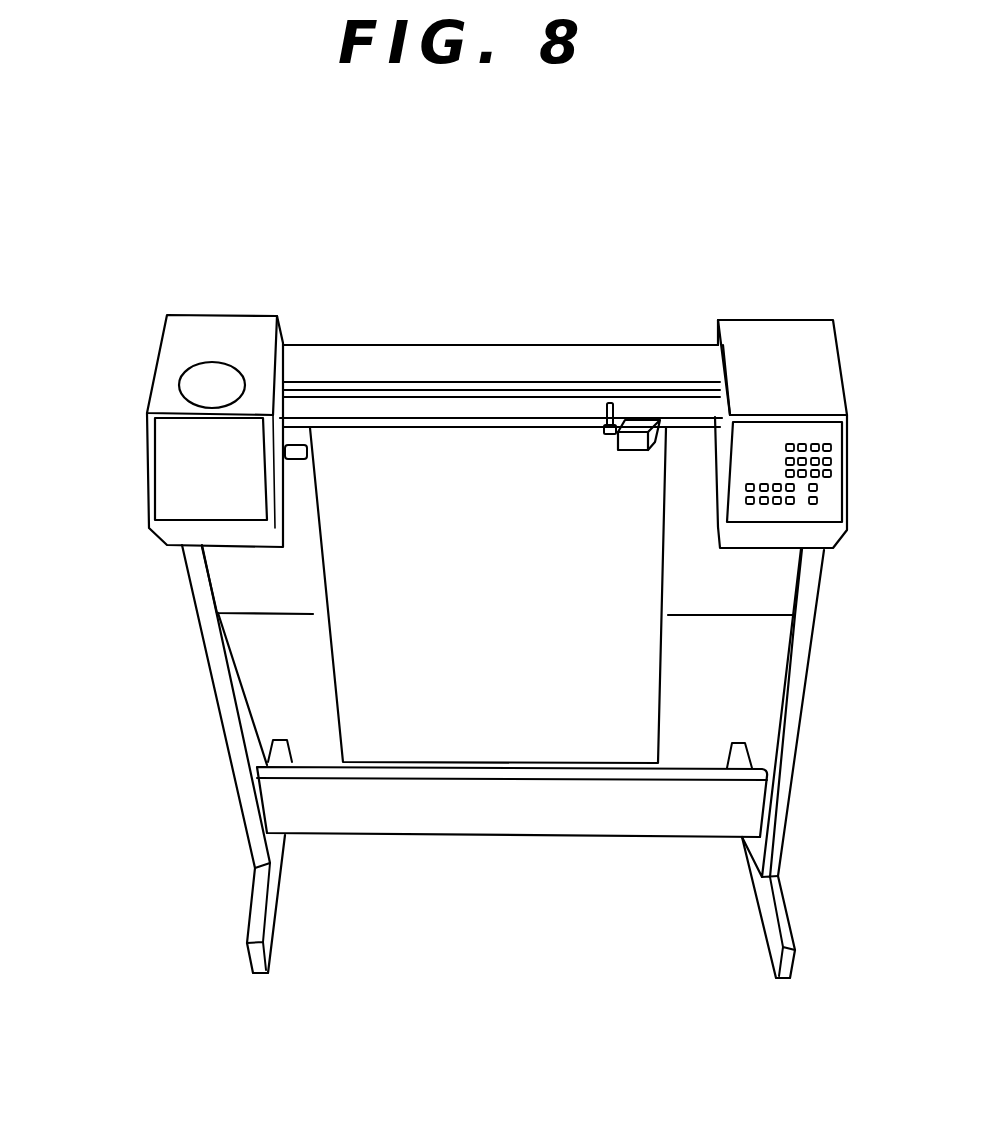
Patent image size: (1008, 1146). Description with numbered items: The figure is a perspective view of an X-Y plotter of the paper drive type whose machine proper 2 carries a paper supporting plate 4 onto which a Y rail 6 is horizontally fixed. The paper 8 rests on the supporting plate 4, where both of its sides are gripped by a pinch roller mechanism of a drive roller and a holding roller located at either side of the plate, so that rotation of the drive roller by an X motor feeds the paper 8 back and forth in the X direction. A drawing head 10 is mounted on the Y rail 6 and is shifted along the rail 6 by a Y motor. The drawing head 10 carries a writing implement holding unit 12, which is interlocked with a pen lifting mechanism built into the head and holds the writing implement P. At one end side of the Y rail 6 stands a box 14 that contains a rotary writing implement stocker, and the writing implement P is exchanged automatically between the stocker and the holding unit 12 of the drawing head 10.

The machine proper 2 is at (147, 468).
The paper supporting plate 4 is at (697, 442).
The Y rail 6 is at (367, 422).
The paper 8 is at (362, 570).
The drawing head 10 is at (640, 424).
The writing implement holding unit 12 is at (598, 430).
The box 14 is at (182, 330).
The writing implement P is at (610, 402).